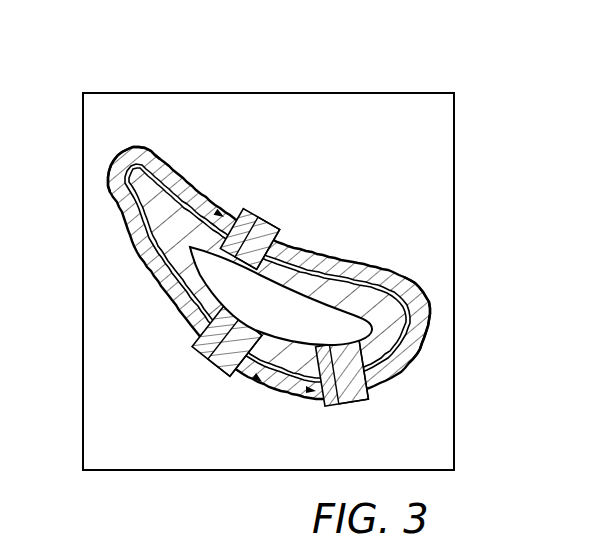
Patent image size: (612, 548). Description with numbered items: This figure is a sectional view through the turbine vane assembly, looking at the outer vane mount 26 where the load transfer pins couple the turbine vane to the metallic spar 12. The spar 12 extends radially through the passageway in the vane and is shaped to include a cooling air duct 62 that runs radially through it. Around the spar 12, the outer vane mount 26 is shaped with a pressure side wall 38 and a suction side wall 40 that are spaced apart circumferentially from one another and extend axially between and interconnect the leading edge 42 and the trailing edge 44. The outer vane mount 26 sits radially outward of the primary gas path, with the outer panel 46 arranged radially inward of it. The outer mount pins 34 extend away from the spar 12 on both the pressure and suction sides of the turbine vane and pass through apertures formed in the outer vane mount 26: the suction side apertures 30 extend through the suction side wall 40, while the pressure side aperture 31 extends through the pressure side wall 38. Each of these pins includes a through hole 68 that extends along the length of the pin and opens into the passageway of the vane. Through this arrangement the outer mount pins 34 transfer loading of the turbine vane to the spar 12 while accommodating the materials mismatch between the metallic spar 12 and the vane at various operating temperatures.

The spar 12 is at (163, 288).
The outer vane mount 26 is at (117, 233).
The suction side apertures 30 is at (306, 390).
The pressure side aperture 31 is at (215, 212).
The outer mount pins 34 is at (244, 208).
The pressure side wall 38 is at (313, 243).
The suction side wall 40 is at (185, 317).
The leading edge 42 is at (431, 313).
The trailing edge 44 is at (125, 160).
The outer panel 46 is at (386, 83).
The cooling air duct 62 is at (284, 334).
The through hole 68 is at (272, 212).